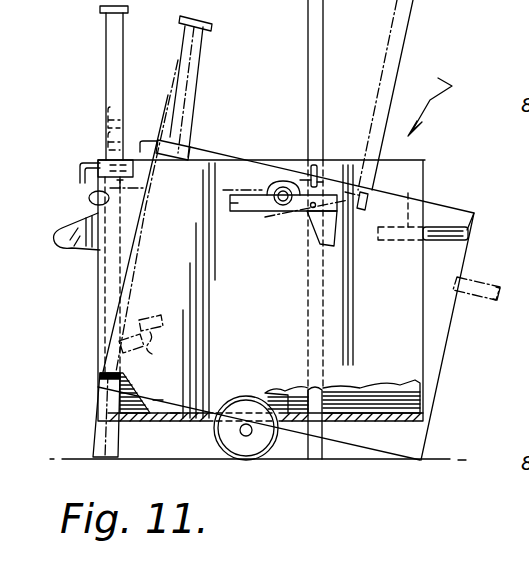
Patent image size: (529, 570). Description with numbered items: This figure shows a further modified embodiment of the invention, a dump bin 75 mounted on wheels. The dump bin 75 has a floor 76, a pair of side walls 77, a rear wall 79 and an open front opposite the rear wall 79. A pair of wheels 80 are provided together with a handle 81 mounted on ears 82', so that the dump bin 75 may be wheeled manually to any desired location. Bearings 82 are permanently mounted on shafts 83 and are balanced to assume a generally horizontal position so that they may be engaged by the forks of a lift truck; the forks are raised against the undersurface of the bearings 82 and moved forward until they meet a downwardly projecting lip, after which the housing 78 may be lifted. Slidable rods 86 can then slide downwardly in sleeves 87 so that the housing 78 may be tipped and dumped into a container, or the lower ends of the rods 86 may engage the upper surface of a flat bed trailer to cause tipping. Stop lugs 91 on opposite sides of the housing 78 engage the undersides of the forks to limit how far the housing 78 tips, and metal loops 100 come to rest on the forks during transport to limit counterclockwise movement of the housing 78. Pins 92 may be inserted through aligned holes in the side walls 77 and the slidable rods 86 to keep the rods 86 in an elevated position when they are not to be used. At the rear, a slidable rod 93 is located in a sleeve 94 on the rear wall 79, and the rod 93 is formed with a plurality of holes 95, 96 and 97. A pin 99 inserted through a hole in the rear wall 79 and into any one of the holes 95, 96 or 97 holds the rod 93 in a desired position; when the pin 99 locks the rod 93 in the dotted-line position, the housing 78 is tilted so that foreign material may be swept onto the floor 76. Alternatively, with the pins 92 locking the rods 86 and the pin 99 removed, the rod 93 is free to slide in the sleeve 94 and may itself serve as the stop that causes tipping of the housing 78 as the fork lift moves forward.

The dump bin 75 is at (430, 100).
The floor 76 is at (380, 392).
The side walls 77 is at (263, 294).
The housing 78 is at (412, 323).
The rear wall 79 is at (98, 395).
The wheels 80 is at (247, 447).
The handle 81 is at (70, 233).
The bearings 82 is at (284, 222).
The ears 82' is at (59, 265).
The shafts 83 is at (283, 212).
The slidable rods 86 is at (308, 48).
The sleeves 87 is at (300, 392).
The stop lugs 91 is at (143, 342).
The pins 92 is at (308, 173).
The slidable rod 93 is at (106, 57).
The sleeve 94 is at (128, 379).
The hole 95 is at (107, 103).
The hole 96 is at (107, 140).
The hole 97 is at (90, 195).
The pin 99 is at (80, 167).
The metal loops 100 is at (132, 160).